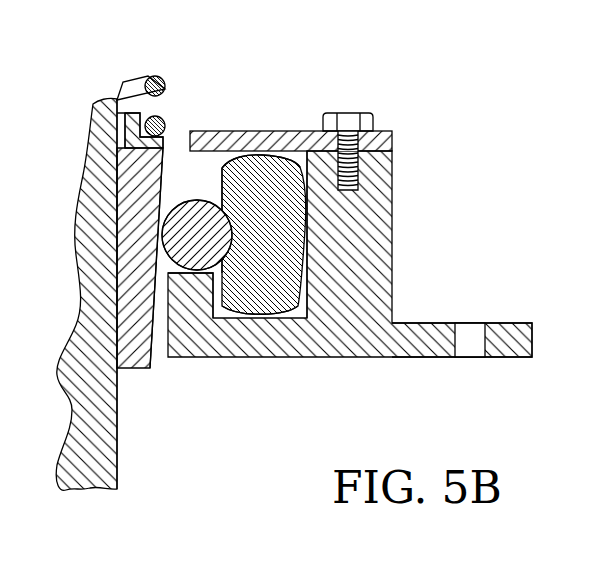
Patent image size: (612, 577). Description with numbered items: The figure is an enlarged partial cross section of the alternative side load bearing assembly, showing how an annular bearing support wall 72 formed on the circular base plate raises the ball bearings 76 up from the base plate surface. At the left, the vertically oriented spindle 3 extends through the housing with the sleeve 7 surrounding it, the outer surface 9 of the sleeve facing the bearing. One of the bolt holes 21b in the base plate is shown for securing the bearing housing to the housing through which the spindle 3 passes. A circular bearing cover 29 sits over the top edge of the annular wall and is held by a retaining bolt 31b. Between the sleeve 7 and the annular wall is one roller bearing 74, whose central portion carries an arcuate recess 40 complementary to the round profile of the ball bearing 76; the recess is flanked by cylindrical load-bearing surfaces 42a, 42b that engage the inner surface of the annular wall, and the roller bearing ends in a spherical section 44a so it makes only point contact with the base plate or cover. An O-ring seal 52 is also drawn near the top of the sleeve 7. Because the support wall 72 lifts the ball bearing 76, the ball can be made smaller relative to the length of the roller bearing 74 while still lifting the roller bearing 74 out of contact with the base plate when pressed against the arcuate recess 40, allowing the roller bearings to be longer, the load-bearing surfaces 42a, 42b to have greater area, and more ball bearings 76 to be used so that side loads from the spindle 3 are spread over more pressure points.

The spindle 3 is at (83, 371).
The sleeve 7 is at (132, 215).
The outer surface of sleeve 9 is at (152, 347).
The bolt hole 21b is at (484, 342).
The circular bearing cover 29 is at (291, 131).
The retaining bolt 31b is at (350, 113).
The arcuate recess 40 is at (307, 230).
The cylindrical load-bearing surface 42a is at (222, 193).
The cylindrical load-bearing surface 42b is at (307, 280).
The spherical section 44a is at (250, 153).
The O-ring 52 is at (157, 76).
The annular bearing support wall 72 is at (184, 307).
The roller bearing 74 is at (255, 244).
The ball bearing 76 is at (183, 245).